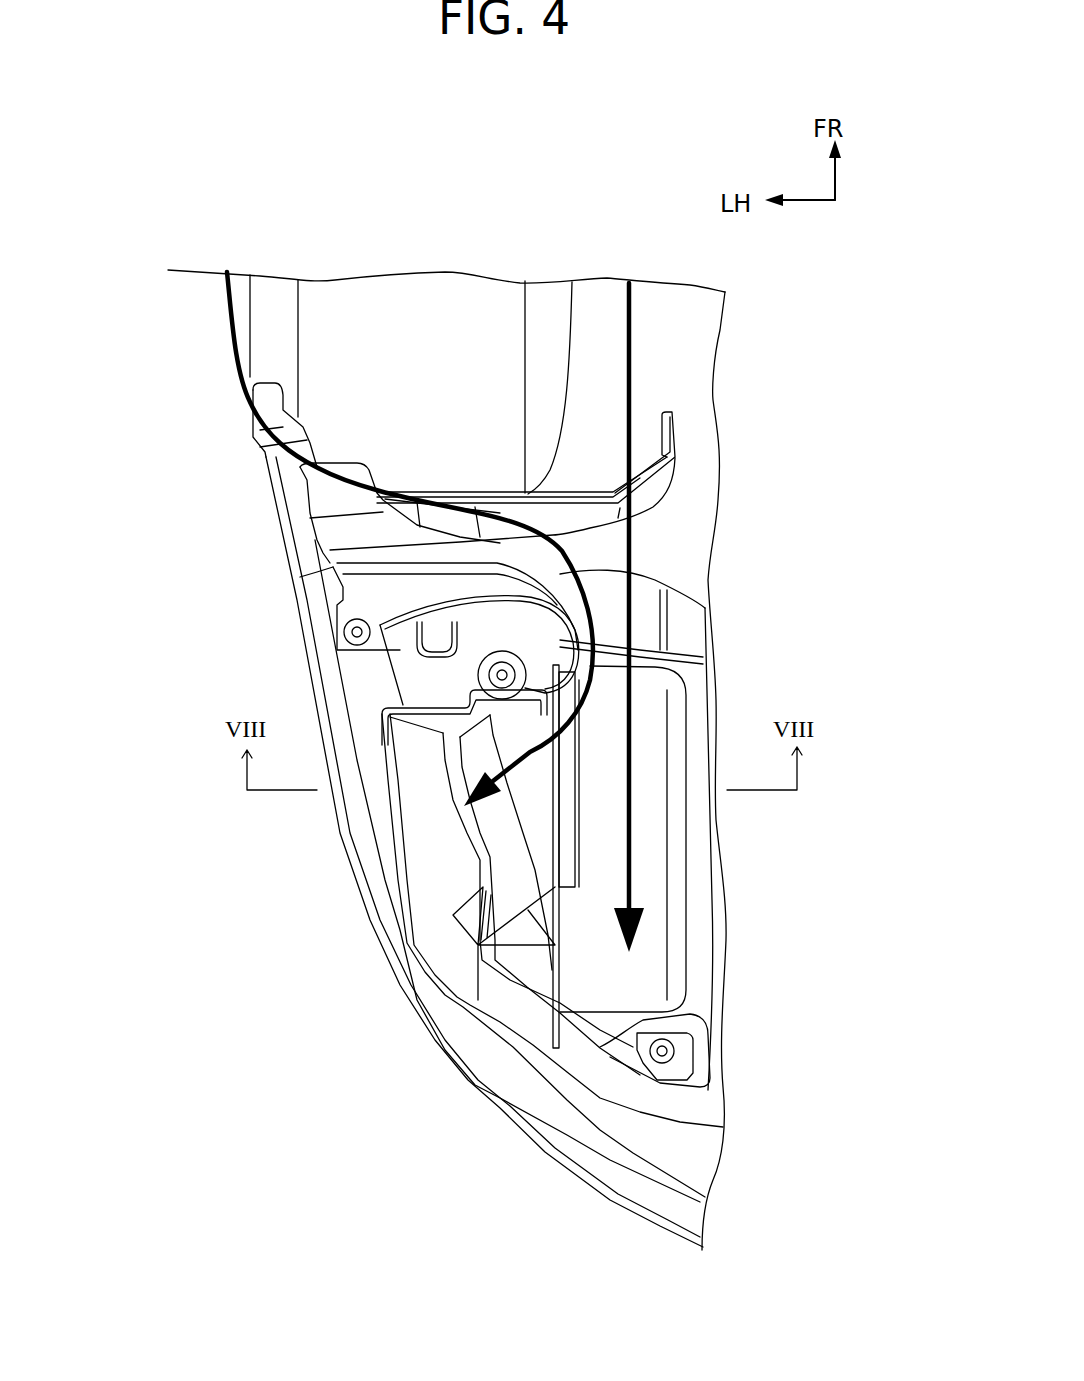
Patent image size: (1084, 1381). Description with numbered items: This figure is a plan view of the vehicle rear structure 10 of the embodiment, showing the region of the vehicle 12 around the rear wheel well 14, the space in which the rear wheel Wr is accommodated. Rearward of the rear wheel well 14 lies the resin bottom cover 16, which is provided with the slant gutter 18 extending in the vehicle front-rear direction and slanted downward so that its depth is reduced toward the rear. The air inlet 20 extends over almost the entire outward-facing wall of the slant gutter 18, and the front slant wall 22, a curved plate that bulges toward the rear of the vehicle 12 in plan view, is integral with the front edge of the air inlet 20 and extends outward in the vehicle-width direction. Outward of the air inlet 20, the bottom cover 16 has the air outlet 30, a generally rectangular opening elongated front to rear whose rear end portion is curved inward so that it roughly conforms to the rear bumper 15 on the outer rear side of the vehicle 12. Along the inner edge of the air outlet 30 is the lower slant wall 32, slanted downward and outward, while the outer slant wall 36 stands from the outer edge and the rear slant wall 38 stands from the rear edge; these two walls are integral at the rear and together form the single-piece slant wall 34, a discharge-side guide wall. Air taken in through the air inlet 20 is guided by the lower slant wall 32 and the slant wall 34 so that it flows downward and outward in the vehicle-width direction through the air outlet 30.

The vehicle rear structure 10 is at (304, 835).
The vehicle 12 is at (614, 1209).
The rear wheel well 14 is at (577, 496).
The rear bumper 15 is at (534, 1150).
The bottom cover 16 is at (706, 984).
The slant gutter 18 is at (656, 738).
The air inlet 20 is at (572, 810).
The front slant wall 22 is at (458, 701).
The air outlet 30 is at (474, 843).
The lower slant wall 32 is at (483, 762).
The slant wall 34 is at (428, 839).
The outer slant wall 36 is at (417, 787).
The rear slant wall 38 is at (585, 880).
The rear wheel Wr is at (431, 316).